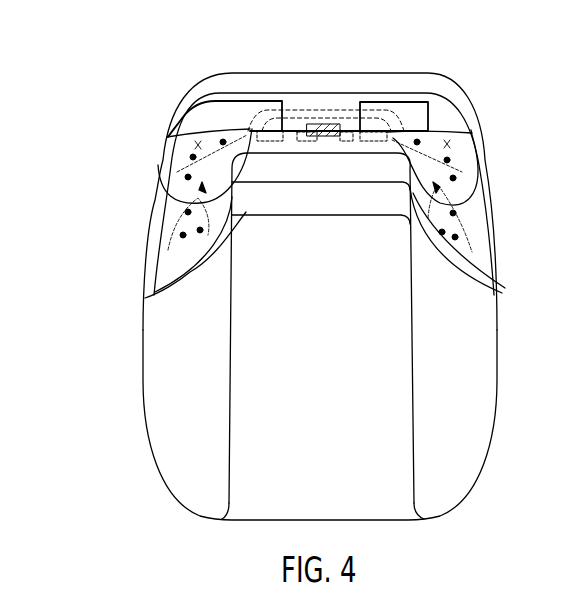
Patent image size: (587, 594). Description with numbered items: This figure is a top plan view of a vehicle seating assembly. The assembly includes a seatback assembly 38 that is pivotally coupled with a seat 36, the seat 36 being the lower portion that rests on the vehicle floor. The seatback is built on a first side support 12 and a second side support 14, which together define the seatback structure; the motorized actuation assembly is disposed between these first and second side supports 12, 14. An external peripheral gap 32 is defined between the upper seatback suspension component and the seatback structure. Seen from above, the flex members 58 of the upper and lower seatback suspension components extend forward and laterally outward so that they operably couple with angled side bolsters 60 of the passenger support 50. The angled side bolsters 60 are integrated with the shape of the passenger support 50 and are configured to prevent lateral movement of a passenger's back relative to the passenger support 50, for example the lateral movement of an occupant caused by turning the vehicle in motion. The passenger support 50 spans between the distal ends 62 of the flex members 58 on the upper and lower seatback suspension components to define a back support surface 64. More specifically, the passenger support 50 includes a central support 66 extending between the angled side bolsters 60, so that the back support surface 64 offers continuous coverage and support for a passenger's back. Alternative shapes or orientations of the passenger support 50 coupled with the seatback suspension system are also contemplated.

The first side support 12 is at (443, 90).
The second side support 14 is at (192, 97).
The external peripheral gap 32 is at (430, 112).
The seat 36 is at (333, 399).
The seatback assembly 38 is at (284, 217).
The passenger support 50 is at (264, 143).
The flex members 58 is at (155, 217).
The angled side bolsters 60 is at (150, 292).
The distal ends 62 is at (322, 148).
The back support surface 64 is at (292, 168).
The central support 66 is at (358, 200).